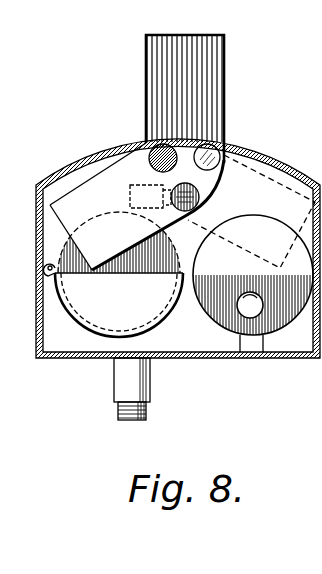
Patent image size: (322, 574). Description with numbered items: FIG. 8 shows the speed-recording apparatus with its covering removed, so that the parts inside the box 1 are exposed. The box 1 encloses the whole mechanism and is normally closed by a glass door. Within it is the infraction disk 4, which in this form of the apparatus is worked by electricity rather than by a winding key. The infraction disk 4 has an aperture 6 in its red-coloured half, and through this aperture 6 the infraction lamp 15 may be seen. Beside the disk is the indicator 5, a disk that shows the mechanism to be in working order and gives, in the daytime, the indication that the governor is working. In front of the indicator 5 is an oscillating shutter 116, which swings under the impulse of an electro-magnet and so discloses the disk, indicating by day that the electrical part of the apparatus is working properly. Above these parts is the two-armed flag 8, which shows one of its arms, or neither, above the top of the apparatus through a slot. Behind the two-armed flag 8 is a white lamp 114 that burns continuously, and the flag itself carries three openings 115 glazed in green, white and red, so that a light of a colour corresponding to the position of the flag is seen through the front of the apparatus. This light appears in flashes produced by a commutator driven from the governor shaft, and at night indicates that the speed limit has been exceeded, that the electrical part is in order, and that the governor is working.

The box 1 is at (36, 251).
The infraction disk 4 is at (251, 221).
The indicator 5 is at (166, 249).
The aperture 6 is at (262, 317).
The two-armed flag 8 is at (213, 76).
The infraction lamp 15 is at (248, 343).
The white lamp 114 is at (142, 184).
The openings 115 is at (213, 160).
The oscillating shutter 116 is at (93, 320).